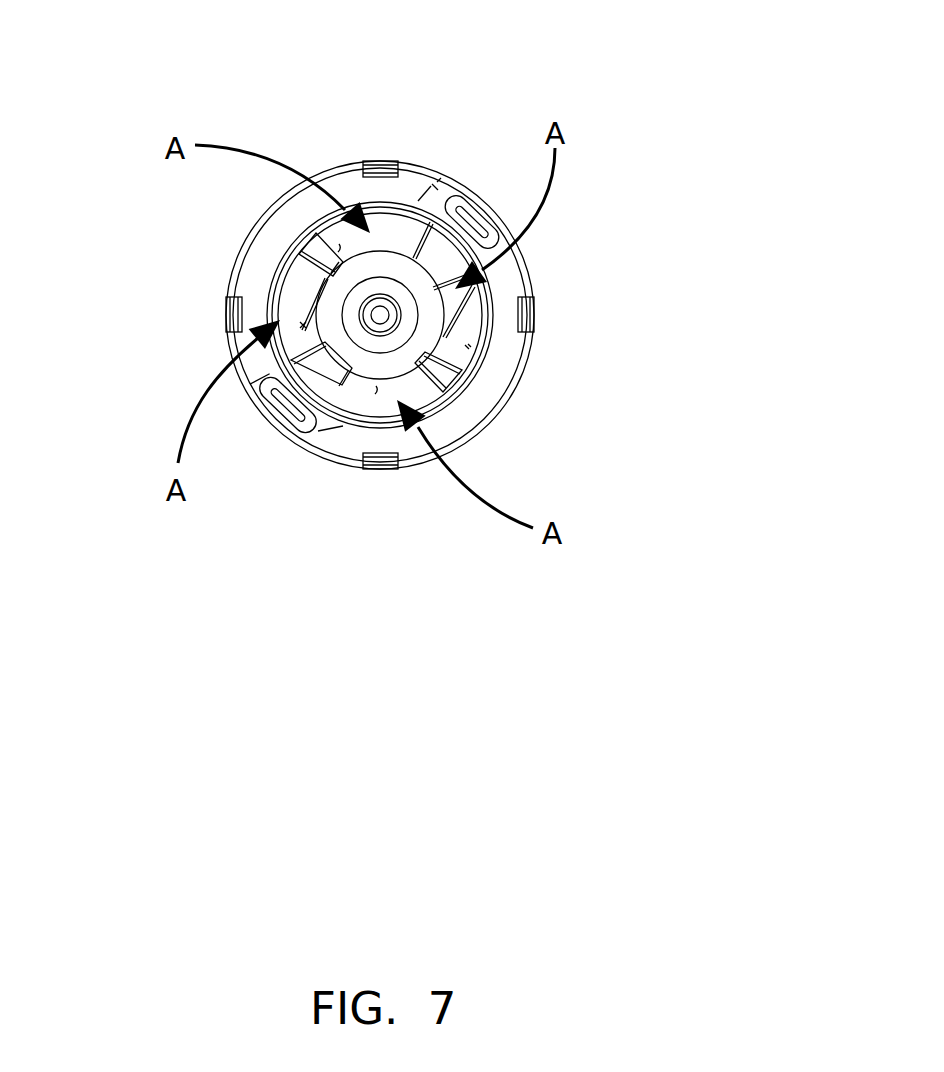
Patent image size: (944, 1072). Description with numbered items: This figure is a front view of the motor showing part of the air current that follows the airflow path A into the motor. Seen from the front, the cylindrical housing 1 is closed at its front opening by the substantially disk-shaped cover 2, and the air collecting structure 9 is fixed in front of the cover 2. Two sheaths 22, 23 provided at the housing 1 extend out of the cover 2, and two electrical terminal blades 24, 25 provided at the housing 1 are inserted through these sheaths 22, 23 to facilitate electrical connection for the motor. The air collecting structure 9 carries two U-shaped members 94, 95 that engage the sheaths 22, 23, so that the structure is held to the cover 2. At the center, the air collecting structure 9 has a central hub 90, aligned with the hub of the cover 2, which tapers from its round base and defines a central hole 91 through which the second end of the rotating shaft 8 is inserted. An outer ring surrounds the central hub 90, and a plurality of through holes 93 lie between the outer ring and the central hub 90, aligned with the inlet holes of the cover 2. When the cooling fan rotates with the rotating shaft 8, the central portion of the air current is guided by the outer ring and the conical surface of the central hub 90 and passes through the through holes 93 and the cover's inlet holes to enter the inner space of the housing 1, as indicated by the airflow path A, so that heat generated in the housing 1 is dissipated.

The housing 1 is at (527, 350).
The cover 2 is at (263, 251).
The sheath 22 is at (275, 407).
The sheath 23 is at (462, 202).
The electrical terminal blade 24 is at (288, 407).
The electrical terminal blade 25 is at (473, 217).
The rotating shaft 8 is at (392, 318).
The air collecting structure 9 is at (380, 421).
The central hub 90 is at (333, 310).
The central hole 91 is at (387, 317).
The through holes 93 is at (347, 163).
The U-shaped member 94 is at (320, 430).
The U-shaped member 95 is at (435, 185).